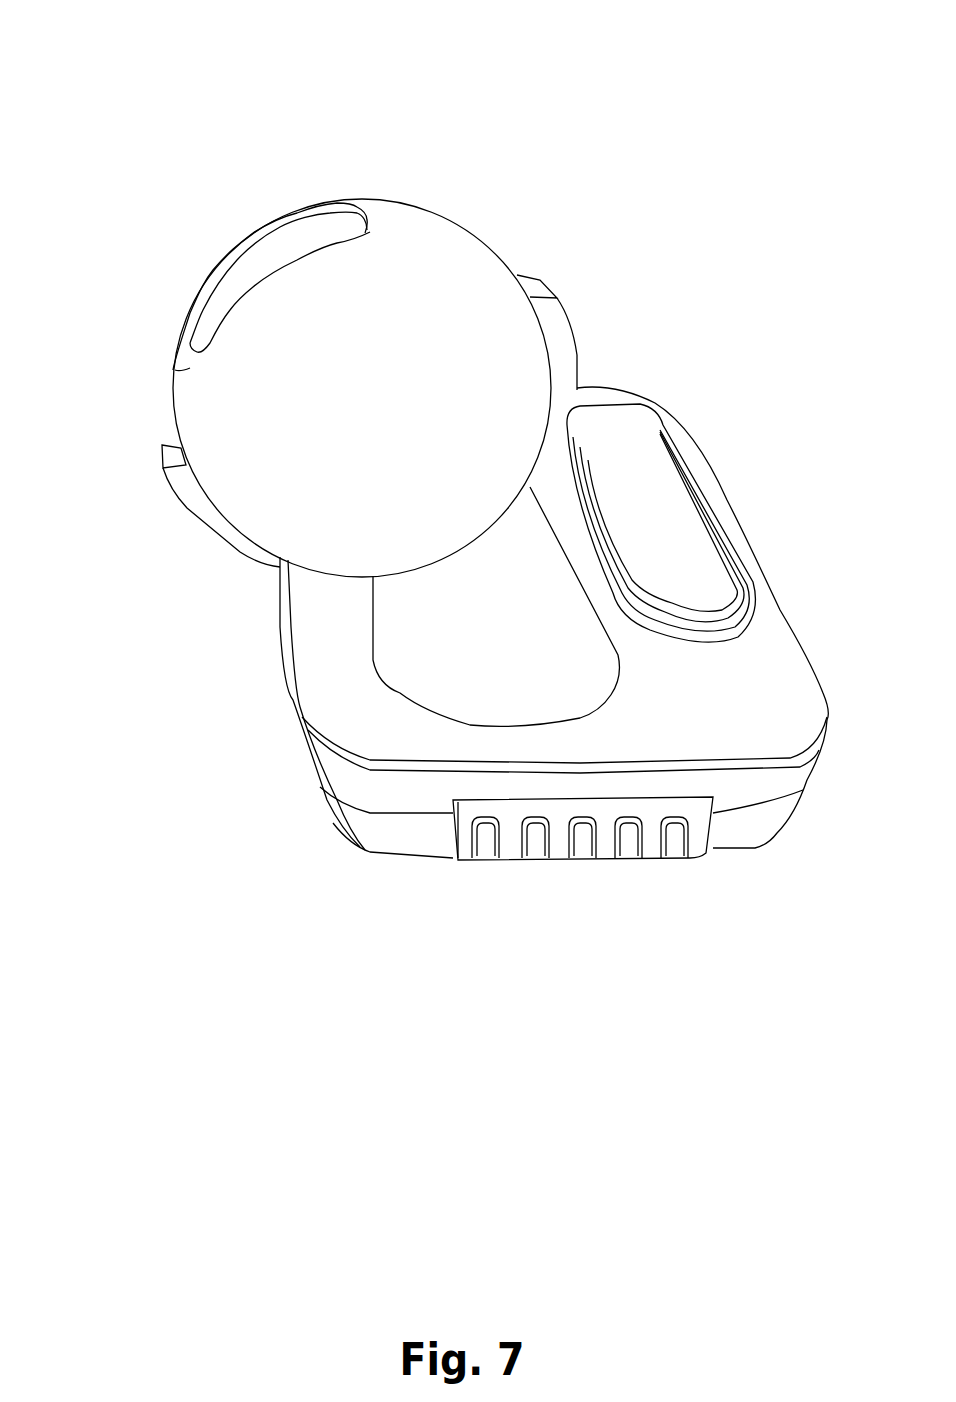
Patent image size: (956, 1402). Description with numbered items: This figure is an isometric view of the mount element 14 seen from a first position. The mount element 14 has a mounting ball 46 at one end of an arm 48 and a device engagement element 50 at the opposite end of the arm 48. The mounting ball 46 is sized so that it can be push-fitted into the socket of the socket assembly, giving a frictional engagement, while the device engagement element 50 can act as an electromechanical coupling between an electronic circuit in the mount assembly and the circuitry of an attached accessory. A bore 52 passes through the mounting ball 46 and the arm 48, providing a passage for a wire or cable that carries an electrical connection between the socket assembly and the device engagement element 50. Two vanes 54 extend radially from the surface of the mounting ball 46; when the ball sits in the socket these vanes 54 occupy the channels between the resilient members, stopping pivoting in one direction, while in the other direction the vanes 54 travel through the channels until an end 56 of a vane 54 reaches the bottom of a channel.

The mount element 14 is at (86, 41).
The mounting ball 46 is at (440, 258).
The arm 48 is at (525, 618).
The device engagement element 50 is at (378, 715).
The bore 52 is at (307, 258).
The vanes 54 is at (553, 330).
The end of a vane 56 is at (537, 285).